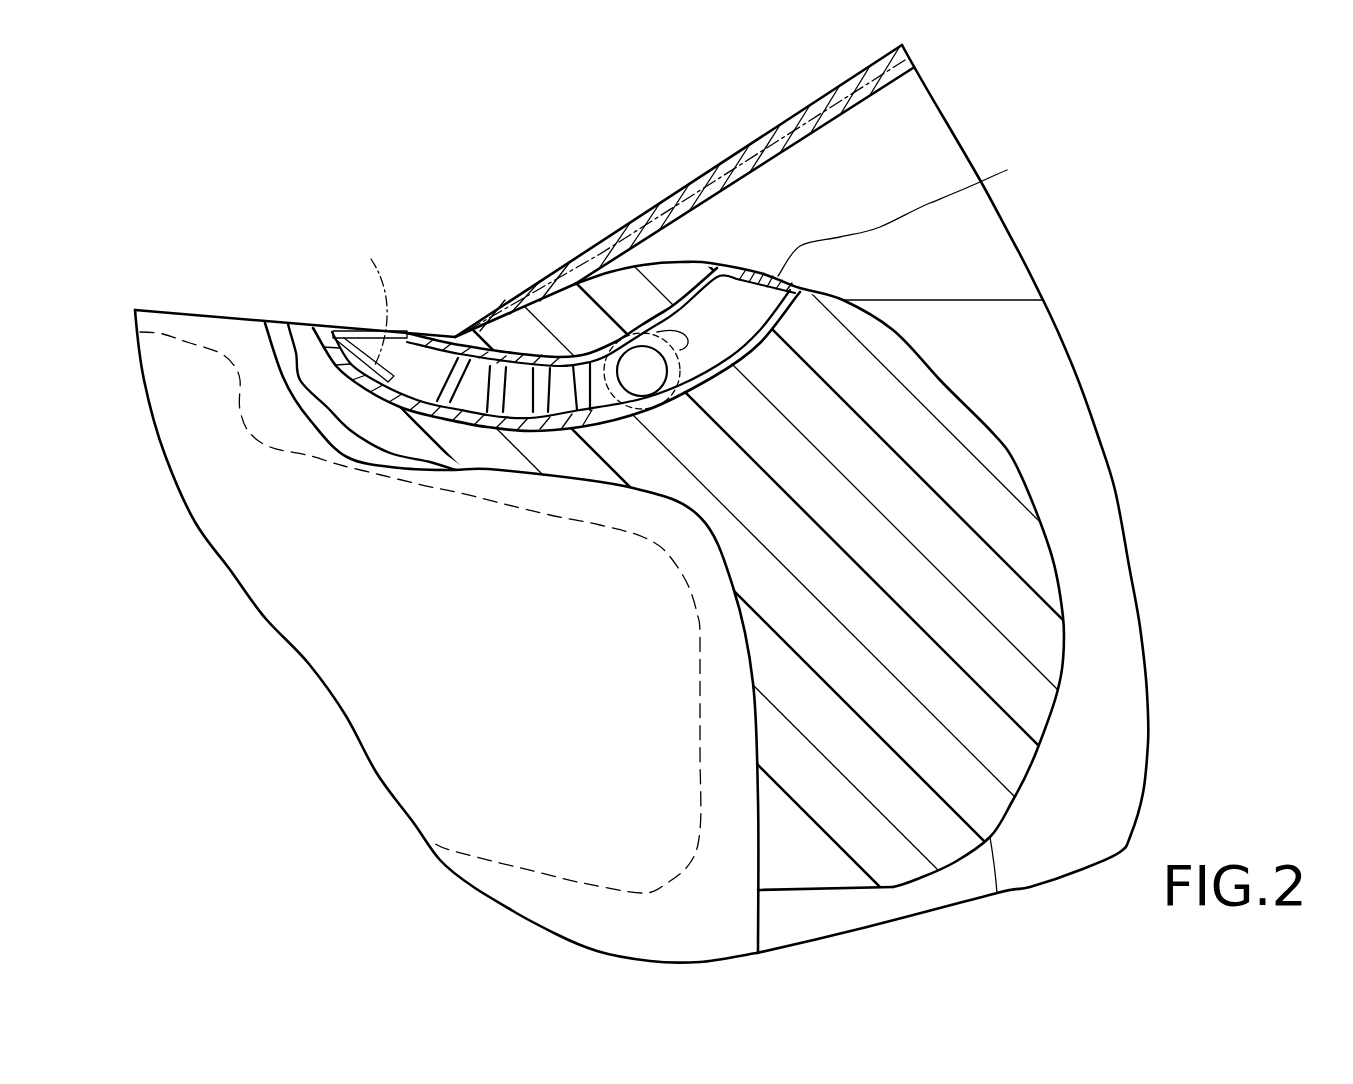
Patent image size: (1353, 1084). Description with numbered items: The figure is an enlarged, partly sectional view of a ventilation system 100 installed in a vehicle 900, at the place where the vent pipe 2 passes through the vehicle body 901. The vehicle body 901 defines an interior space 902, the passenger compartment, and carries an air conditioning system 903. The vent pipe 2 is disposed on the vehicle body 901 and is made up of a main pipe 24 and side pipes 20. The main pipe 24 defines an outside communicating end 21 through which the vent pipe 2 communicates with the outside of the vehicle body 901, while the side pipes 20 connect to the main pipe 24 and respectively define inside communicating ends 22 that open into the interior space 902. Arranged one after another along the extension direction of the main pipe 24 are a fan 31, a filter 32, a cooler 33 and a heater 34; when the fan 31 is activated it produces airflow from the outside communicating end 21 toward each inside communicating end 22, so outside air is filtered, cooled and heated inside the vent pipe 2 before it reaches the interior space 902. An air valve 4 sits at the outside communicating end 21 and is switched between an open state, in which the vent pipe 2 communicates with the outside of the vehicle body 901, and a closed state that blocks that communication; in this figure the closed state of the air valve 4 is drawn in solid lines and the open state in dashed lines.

The ventilation system 100 is at (762, 258).
The vent pipe 2 is at (740, 367).
The side pipes 20 is at (690, 287).
The outside communicating end 21 is at (345, 376).
The inside communicating ends 22 is at (910, 217).
The main pipe 24 is at (292, 336).
The air valve 4 is at (360, 333).
The fan 31 is at (580, 370).
The filter 32 is at (451, 373).
The cooler 33 is at (498, 373).
The heater 34 is at (540, 377).
The vehicle 900 is at (1136, 500).
The vehicle body 901 is at (189, 308).
The interior space 902 is at (1093, 604).
The air conditioning (A/C) system 903 is at (374, 561).